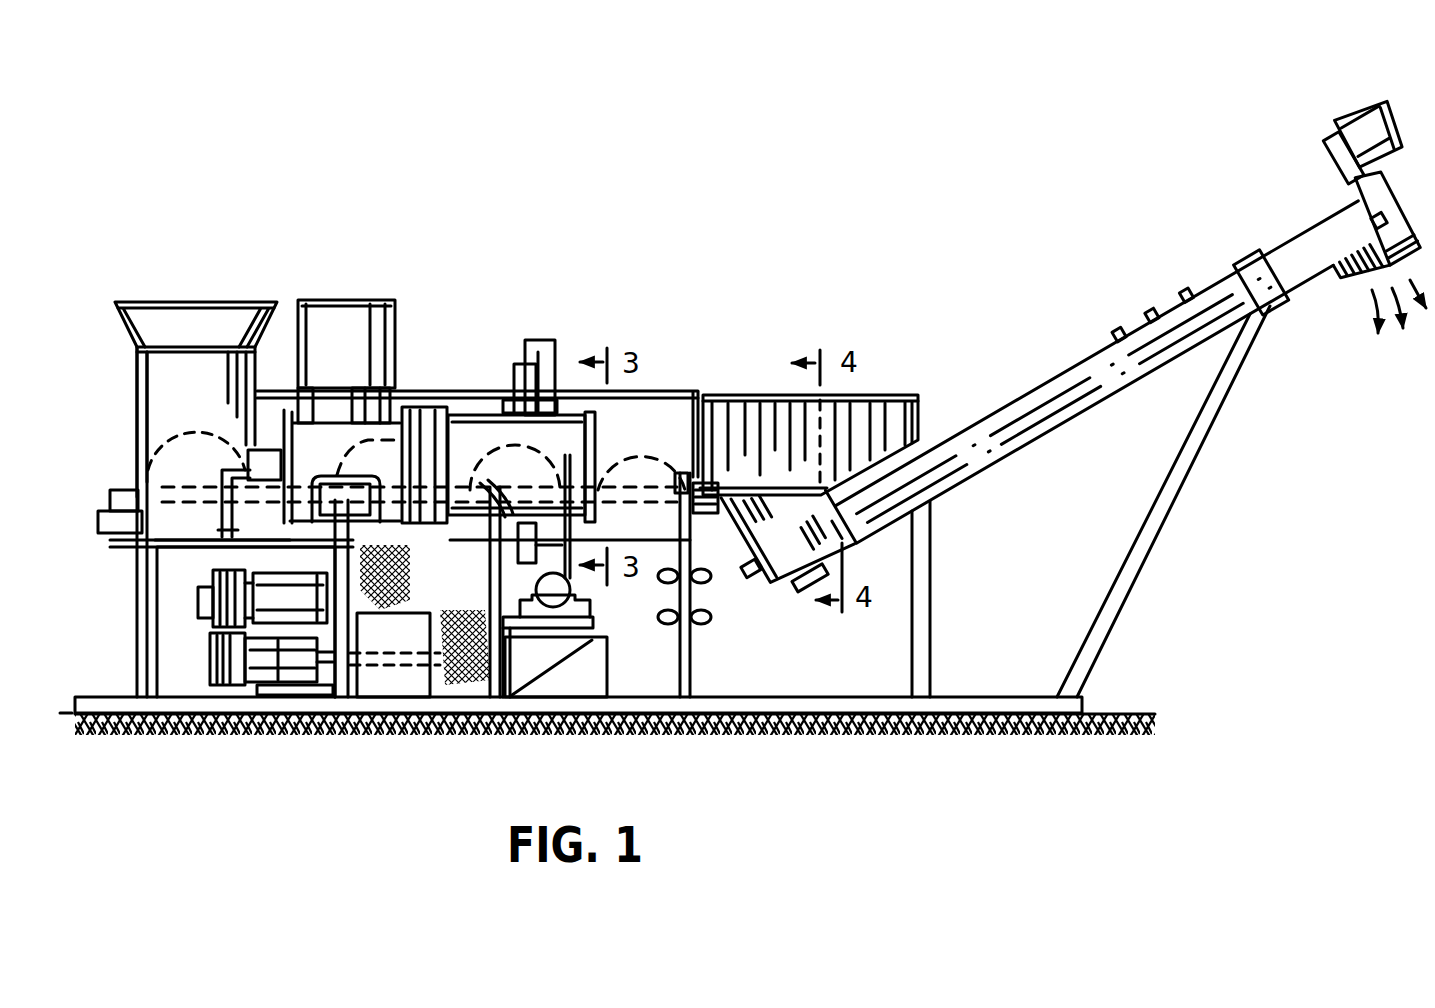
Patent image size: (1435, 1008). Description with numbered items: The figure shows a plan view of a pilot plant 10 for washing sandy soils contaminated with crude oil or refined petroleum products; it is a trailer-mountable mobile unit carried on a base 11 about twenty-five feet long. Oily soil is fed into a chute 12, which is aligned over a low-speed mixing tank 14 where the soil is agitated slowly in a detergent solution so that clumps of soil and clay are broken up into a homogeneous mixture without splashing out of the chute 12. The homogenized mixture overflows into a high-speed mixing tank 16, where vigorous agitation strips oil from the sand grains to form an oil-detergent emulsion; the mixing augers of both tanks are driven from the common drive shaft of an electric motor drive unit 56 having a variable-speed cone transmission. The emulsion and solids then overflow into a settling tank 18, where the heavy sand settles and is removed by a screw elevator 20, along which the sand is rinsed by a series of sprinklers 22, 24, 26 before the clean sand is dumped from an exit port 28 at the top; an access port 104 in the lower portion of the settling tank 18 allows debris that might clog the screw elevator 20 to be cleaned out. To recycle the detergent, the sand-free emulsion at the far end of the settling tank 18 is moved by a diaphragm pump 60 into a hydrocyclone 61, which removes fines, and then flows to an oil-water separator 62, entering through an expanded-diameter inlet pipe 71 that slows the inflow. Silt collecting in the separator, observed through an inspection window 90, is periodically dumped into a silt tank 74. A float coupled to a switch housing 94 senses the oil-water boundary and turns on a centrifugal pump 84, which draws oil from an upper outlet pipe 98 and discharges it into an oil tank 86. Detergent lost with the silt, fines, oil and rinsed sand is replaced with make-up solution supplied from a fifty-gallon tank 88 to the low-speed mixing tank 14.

The pilot plant 10 is at (882, 193).
The base 11 is at (1082, 704).
The chute 12 is at (233, 284).
The low-speed mixing tank 14 is at (193, 558).
The high-speed mixing tank 16 is at (645, 405).
The settling tank 18 is at (858, 418).
The screw elevator 20 is at (1066, 370).
The sprinkler 22 is at (1117, 327).
The sprinkler 24 is at (1150, 308).
The sprinkler 26 is at (1186, 288).
The exit port 28 is at (1362, 282).
The electric motor drive unit 56 is at (198, 638).
The diaphragm pump 60 is at (564, 585).
The hydrocyclone 61 is at (718, 612).
The oil-water separator 62 is at (470, 445).
The expanded-diameter inlet pipe 71 is at (272, 450).
The silt tank 74 is at (403, 708).
The centrifugal pump 84 is at (597, 606).
The oil tank 86 is at (588, 675).
The 50-gallon tank 88 is at (395, 320).
The inspection window 90 is at (330, 497).
The switch housing 94 is at (600, 480).
The upper outlet pipe 98 is at (520, 376).
The access port 104 is at (800, 590).